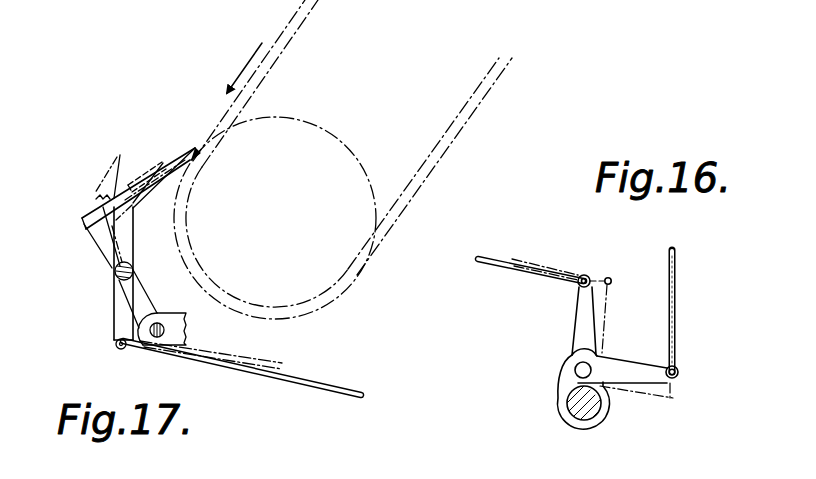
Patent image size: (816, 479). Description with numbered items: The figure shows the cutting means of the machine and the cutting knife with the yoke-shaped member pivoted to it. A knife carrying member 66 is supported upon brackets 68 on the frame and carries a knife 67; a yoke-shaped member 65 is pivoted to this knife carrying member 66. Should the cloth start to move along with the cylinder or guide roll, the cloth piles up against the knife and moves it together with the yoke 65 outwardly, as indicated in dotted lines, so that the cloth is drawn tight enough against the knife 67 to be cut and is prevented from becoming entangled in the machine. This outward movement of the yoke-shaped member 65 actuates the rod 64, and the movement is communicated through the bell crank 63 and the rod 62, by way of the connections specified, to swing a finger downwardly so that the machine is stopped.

In FIG. 16, the rod 62 is at (677, 295).
In FIG. 16, the bell crank 63 is at (578, 326).
In FIG. 16, the rod 64 is at (500, 258).
In FIG. 17, the rod 64 is at (296, 384).
In FIG. 17, the yoke-shaped member 65 is at (118, 308).
In FIG. 17, the knife carrying member 66 is at (103, 242).
In FIG. 17, the knife 67 is at (186, 164).
In FIG. 17, the brackets 68 is at (180, 325).